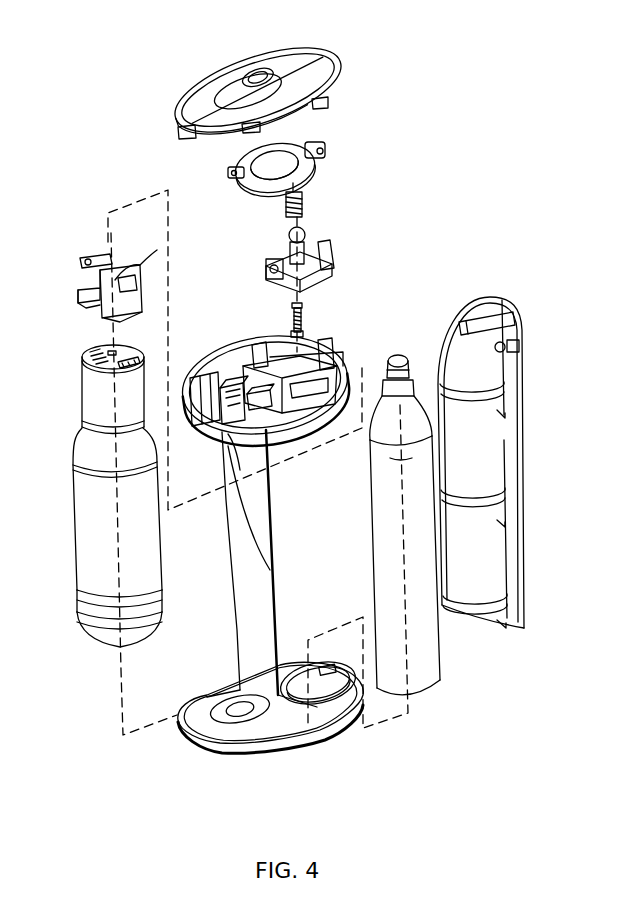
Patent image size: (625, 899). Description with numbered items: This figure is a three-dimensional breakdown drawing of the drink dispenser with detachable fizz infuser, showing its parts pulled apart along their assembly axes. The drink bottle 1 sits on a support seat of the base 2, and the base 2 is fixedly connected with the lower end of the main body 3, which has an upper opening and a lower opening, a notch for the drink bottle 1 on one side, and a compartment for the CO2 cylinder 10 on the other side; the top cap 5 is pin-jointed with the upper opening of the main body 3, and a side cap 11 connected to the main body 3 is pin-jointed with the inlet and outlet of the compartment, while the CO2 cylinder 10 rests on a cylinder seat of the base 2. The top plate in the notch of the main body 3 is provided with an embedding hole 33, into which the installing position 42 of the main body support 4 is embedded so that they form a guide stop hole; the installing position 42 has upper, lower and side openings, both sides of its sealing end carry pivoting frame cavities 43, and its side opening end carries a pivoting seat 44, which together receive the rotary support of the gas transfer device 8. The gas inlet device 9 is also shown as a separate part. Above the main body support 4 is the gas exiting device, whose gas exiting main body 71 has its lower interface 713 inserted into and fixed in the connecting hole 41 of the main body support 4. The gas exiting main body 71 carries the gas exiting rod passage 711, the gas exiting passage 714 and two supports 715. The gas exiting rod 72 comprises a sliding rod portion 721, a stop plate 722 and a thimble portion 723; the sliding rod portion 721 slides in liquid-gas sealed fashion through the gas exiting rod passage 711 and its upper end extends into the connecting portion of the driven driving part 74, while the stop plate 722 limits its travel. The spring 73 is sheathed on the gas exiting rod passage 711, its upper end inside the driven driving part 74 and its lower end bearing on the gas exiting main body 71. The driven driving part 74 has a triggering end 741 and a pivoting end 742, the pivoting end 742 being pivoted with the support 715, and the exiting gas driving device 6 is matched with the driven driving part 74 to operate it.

The drink bottle 1 is at (86, 527).
The base 2 is at (290, 730).
The main body 3 is at (225, 601).
The embedding hole 33 is at (222, 432).
The main body support 4 is at (285, 412).
The connecting hole 41 is at (297, 400).
The installing position 42 is at (225, 390).
The pivoting frame cavity 43 is at (262, 405).
The pivoting seat 44 is at (191, 386).
The top cap 5 is at (307, 65).
The exiting gas driving device 6 is at (234, 80).
The gas transfer device 8 is at (78, 287).
The gas inlet device 9 is at (92, 400).
The CO2 cylinder 10 is at (418, 676).
The side cap 11 is at (490, 507).
The gas exiting main body 71 is at (316, 263).
The gas exiting rod passage 711 is at (306, 236).
The lower interface 713 is at (318, 283).
The gas exiting passage 714 is at (268, 262).
The support 715 is at (328, 262).
The gas exiting rod 72 is at (290, 321).
The sliding rod portion 721 is at (303, 313).
The stop plate 722 is at (292, 326).
The thimble portion 723 is at (304, 335).
The spring 73 is at (306, 205).
The driven driving part 74 is at (328, 220).
The triggering end 741 is at (228, 170).
The pivoting end 742 is at (324, 152).